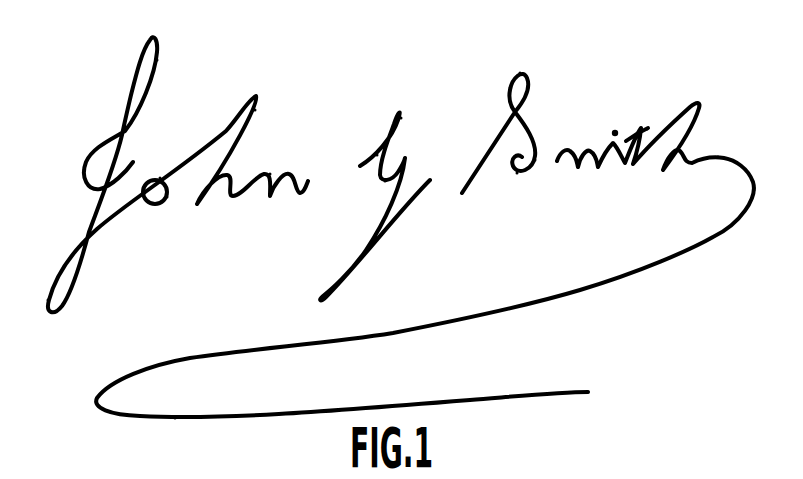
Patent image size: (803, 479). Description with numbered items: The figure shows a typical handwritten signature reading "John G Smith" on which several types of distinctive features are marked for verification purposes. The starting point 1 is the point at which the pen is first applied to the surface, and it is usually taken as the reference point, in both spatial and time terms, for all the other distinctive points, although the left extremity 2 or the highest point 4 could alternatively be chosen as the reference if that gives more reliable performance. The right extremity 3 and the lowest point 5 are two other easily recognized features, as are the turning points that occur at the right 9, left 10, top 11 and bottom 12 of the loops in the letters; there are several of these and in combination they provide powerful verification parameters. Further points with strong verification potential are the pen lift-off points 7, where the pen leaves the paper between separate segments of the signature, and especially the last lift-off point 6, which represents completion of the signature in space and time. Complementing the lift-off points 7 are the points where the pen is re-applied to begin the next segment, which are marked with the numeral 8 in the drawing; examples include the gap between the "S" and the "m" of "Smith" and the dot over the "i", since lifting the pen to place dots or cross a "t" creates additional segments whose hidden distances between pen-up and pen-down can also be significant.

The starting point 1 is at (141, 149).
The left extremity 2 is at (44, 305).
The right extremity 3 is at (755, 188).
The highest point 4 is at (147, 33).
The lowest point 5 is at (176, 422).
The last lift-off point 6 is at (650, 128).
The pen lift-off point 7 is at (308, 181).
The pen-down stroke start point 8 is at (359, 162).
The right turning point 9 is at (165, 62).
The left turning point 10 is at (81, 164).
The top turning point 11 is at (159, 36).
The bottom turning point 12 is at (87, 194).